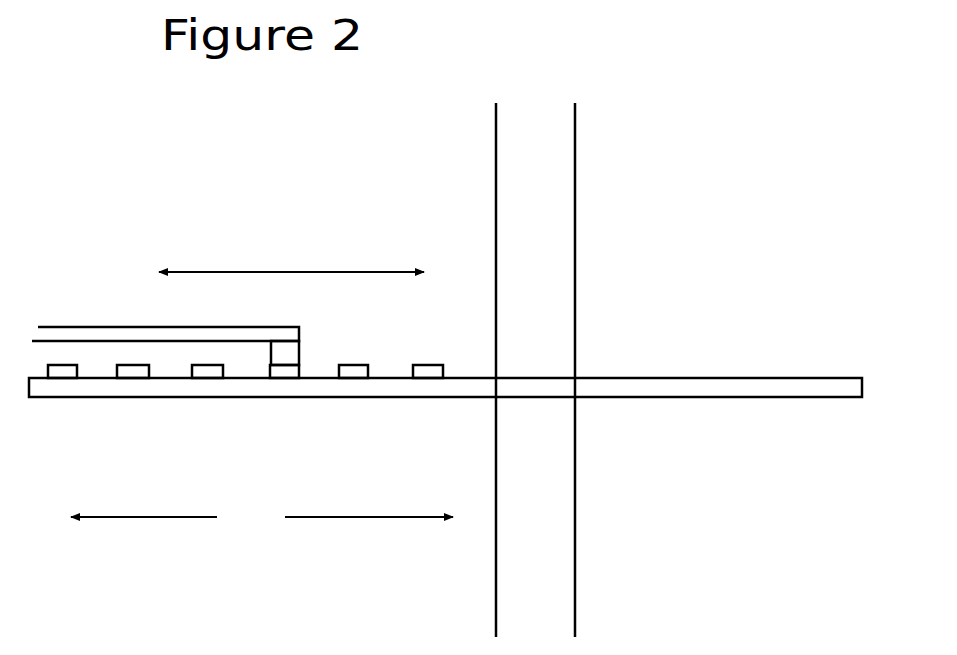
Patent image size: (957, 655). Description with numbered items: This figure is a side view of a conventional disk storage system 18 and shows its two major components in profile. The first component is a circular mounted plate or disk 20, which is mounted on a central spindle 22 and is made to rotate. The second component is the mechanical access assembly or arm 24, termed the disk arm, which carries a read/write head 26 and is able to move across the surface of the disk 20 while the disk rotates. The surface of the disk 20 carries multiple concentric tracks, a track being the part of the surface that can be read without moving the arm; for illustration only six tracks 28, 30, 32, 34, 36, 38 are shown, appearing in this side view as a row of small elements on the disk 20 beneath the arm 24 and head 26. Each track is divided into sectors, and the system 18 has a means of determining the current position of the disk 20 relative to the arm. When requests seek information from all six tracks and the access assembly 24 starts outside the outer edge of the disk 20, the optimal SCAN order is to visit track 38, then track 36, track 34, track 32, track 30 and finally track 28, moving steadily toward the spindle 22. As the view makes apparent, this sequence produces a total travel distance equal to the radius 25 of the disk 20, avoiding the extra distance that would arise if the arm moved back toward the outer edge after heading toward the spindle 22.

The conventional disk storage system 18 is at (219, 178).
The disk 20 is at (767, 397).
The central spindle 22 is at (540, 122).
The mechanical access assembly 24 is at (88, 327).
The radius 25 is at (251, 530).
The read/write head 26 is at (288, 356).
The track 28 is at (430, 376).
The track 30 is at (355, 376).
The track 32 is at (285, 376).
The track 34 is at (210, 376).
The track 36 is at (127, 376).
The track 38 is at (67, 376).